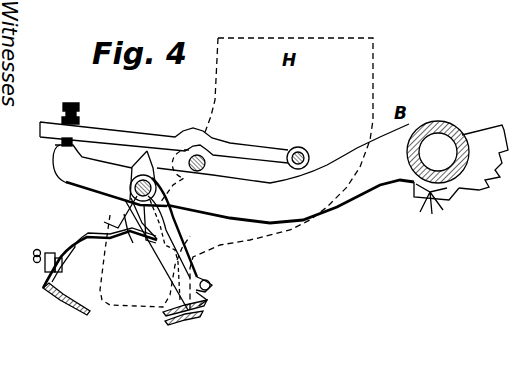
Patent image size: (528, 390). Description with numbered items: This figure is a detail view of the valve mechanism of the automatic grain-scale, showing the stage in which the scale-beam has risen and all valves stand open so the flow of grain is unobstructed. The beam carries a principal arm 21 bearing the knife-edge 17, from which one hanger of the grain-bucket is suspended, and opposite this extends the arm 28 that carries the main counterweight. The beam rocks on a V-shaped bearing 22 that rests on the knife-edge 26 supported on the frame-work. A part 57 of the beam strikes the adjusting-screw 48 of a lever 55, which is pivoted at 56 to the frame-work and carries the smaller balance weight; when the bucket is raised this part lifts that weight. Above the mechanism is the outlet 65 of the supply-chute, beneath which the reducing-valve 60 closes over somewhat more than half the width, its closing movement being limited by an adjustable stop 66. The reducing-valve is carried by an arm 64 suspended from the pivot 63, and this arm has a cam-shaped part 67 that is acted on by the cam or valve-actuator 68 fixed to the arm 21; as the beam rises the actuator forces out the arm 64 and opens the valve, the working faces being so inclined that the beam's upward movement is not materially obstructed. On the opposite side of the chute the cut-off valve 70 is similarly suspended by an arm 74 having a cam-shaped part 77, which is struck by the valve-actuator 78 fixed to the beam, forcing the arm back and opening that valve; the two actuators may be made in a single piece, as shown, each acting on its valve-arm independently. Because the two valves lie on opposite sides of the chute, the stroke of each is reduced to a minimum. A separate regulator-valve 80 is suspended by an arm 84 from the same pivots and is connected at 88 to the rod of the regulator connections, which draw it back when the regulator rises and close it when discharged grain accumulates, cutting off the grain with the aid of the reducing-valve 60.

The adjusting-screw 48 is at (77, 109).
The lever 55 is at (153, 139).
The part of main beam 57 is at (62, 150).
The pivot or knife-edge 17 is at (143, 164).
The pivot 63 is at (135, 185).
The arm 64 is at (205, 158).
The pivot 56 is at (300, 151).
The reducing-valve 60 is at (445, 123).
The arm 28 is at (487, 144).
The V-shaped bearing 22 is at (447, 197).
The pivot or knife-edge 26 is at (431, 214).
The principal arm 21 is at (332, 173).
The arm 74 is at (172, 209).
The cam-shaped part 77 is at (176, 250).
The cam-shaped part 67 is at (117, 228).
The cam or valve-actuator 68 is at (128, 224).
The cam or valve-actuator 78 is at (146, 232).
The adjustable stop 66 is at (34, 256).
The outlet 65 is at (133, 303).
The arm 84 is at (206, 280).
The connection point 88 is at (211, 285).
The regulator-valve 80 is at (200, 312).
The cut-off valve 70 is at (190, 323).